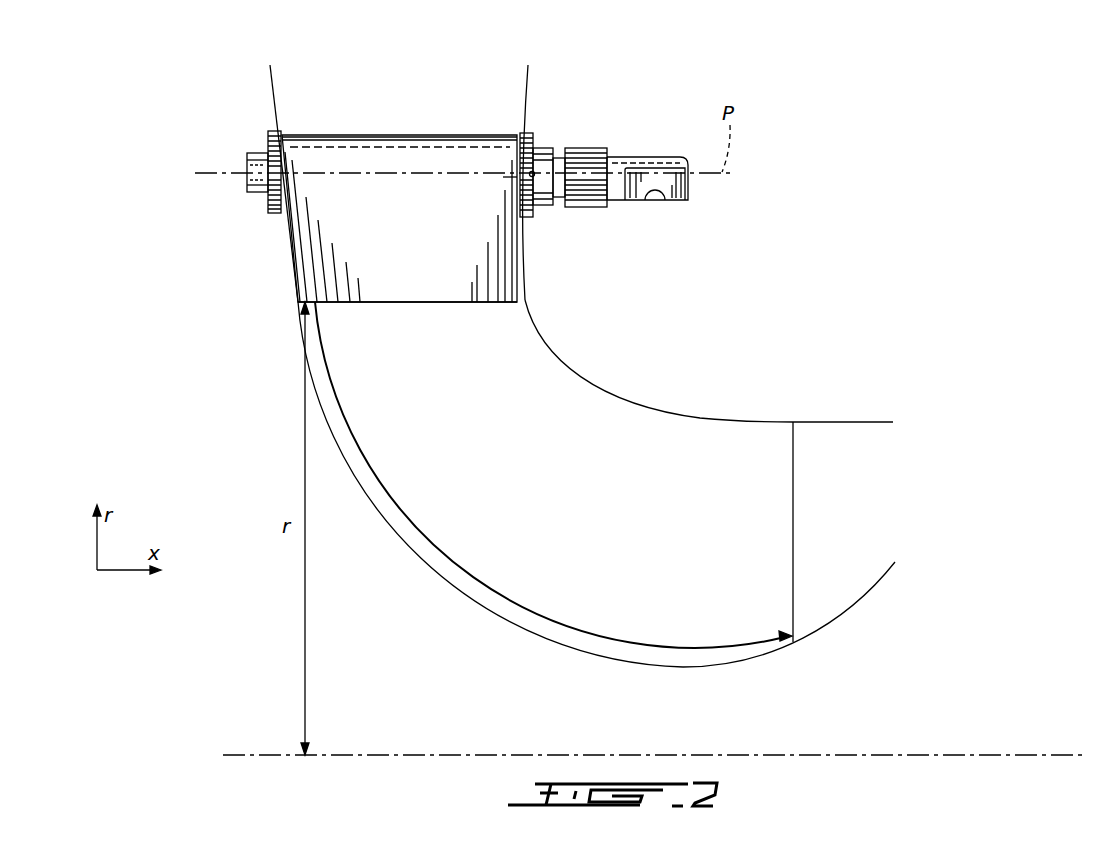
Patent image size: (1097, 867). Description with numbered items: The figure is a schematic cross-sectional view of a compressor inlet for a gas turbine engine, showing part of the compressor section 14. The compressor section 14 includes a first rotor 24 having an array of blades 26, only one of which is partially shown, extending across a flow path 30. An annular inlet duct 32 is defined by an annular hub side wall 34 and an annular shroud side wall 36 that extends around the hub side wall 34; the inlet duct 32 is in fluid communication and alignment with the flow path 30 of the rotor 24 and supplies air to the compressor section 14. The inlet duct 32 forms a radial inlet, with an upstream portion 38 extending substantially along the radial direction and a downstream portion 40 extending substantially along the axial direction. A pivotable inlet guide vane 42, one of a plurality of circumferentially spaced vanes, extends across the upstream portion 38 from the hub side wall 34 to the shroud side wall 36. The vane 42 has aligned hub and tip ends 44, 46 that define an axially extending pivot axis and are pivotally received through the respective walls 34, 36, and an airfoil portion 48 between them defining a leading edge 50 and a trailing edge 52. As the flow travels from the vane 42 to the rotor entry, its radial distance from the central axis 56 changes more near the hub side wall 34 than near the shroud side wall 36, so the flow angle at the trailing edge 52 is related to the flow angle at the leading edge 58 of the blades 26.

The compressor section 14 is at (826, 205).
The first rotor 24 is at (915, 347).
The blades 26 is at (835, 568).
The flow path 30 is at (876, 488).
The annular inlet duct 32 is at (586, 398).
The hub side wall 34 is at (600, 658).
The shroud side wall 36 is at (697, 415).
The upstream portion 38 is at (312, 122).
The downstream portion 40 is at (710, 595).
The inlet guide vane 42 is at (434, 192).
The hub end 44 is at (255, 163).
The tip end 46 is at (677, 185).
The airfoil portion 48 is at (497, 225).
The leading edge 50 is at (384, 133).
The trailing edge 52 is at (402, 302).
The central axis 56 is at (1040, 752).
The leading edge 58 is at (793, 525).